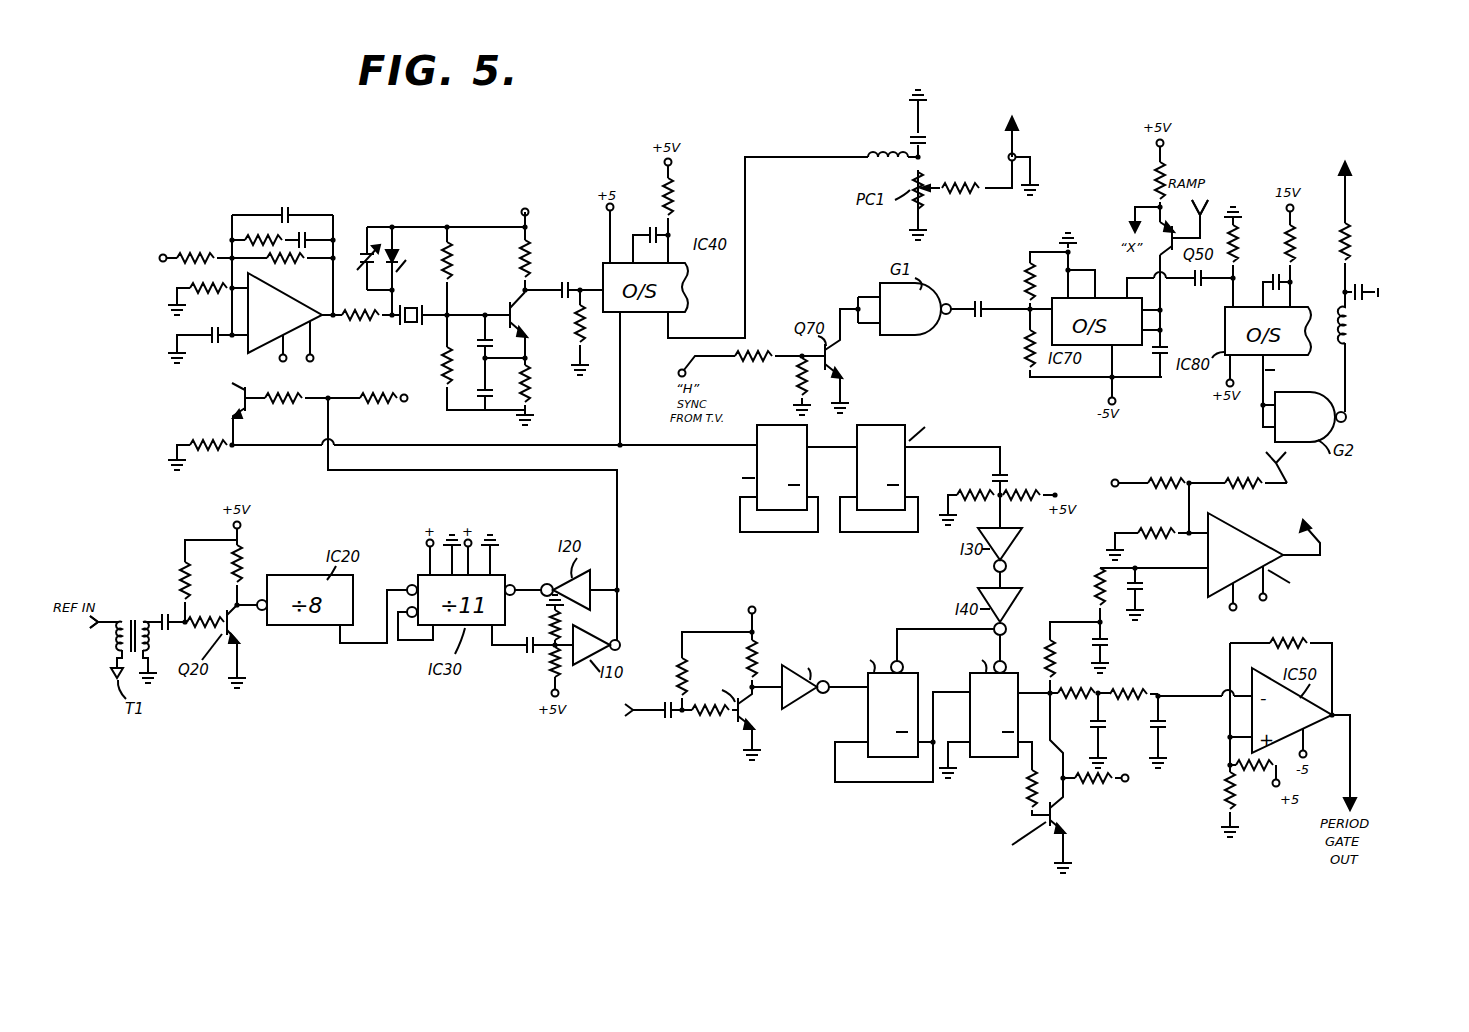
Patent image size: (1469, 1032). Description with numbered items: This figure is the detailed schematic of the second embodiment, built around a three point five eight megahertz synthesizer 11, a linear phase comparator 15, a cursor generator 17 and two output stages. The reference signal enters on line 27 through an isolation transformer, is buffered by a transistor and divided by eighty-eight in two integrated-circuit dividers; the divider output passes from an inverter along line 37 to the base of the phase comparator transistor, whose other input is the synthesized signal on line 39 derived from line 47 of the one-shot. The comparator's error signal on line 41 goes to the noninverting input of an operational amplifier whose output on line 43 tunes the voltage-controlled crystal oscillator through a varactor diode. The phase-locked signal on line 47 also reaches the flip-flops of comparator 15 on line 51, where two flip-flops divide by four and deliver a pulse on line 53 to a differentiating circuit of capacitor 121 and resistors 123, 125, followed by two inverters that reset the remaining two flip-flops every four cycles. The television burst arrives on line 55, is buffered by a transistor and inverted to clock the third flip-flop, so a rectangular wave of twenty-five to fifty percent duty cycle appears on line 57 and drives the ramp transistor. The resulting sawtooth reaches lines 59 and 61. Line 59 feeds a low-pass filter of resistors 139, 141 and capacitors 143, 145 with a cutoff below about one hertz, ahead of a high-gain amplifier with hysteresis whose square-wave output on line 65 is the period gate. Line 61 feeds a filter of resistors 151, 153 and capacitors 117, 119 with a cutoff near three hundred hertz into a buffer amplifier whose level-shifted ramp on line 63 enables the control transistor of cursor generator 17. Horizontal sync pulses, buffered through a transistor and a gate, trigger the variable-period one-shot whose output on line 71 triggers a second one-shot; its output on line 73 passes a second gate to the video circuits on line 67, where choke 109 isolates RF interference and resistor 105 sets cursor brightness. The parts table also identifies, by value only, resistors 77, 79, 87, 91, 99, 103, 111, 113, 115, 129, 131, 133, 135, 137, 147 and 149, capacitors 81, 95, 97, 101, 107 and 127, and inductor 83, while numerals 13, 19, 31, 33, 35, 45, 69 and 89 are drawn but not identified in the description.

The 3.58 MHz synthesizer 11 is at (410, 190).
The burst input / phase comparator circuit 13 is at (668, 782).
The linear phase comparator 15 is at (848, 575).
The cursor generator 17 is at (1224, 112).
The period gate circuit 19 is at (1160, 804).
The line 27 is at (92, 632).
The amplified reference signal 31 is at (253, 620).
The divide-by-eight output line 33 is at (375, 650).
The divider output line 35 is at (505, 650).
The line 37 is at (440, 474).
The line 39 is at (440, 448).
The line 41 is at (232, 332).
The line 43 is at (340, 318).
The coupling capacitor 45 is at (550, 302).
The line 47 is at (620, 383).
The line 51 is at (655, 447).
The line 53 is at (973, 446).
The line 55 is at (664, 708).
The line 57 is at (1030, 766).
The line 59 is at (1057, 698).
The line 61 is at (1052, 690).
The line 63 is at (1211, 200).
The line 65 is at (1352, 765).
The output line 67 is at (1350, 212).
The X control signal 69 is at (1134, 207).
The line 71 is at (1132, 276).
The line 73 is at (1280, 380).
The resistor 77 is at (762, 360).
The resistor 79 is at (800, 388).
The capacitor 81 is at (982, 312).
The inductor 83 is at (872, 150).
The resistor 87 is at (962, 195).
The chroma output terminal 89 is at (1018, 155).
The resistor 91 is at (1028, 278).
The capacitor 95 is at (1166, 357).
The capacitor 97 is at (1195, 284).
The resistor 99 is at (1154, 190).
The capacitor 101 is at (1276, 270).
The resistor 103 is at (1295, 250).
The resistor 105 is at (1355, 242).
The capacitor 107 is at (1366, 302).
The choke 109 is at (1350, 342).
The resistor 111 is at (1176, 478).
The resistor 113 is at (1238, 478).
The resistor 115 is at (1168, 515).
The capacitor 117 is at (1145, 593).
The capacitor 119 is at (1108, 648).
The capacitor 121 is at (1006, 476).
The resistor 123 is at (968, 490).
The resistor 125 is at (1035, 492).
The capacitor 127 is at (703, 725).
The resistor 129 is at (668, 660).
The resistor 131 is at (718, 722).
The resistor 133 is at (736, 657).
The resistor 135 is at (1028, 793).
The resistor 137 is at (1106, 782).
The resistor 139 is at (1090, 691).
The resistor 141 is at (1134, 691).
The capacitor 143 is at (1104, 731).
The capacitor 145 is at (1164, 731).
The resistor 147 is at (1238, 806).
The resistor 149 is at (1302, 641).
The resistor 151 is at (1098, 596).
The resistor 153 is at (1050, 652).